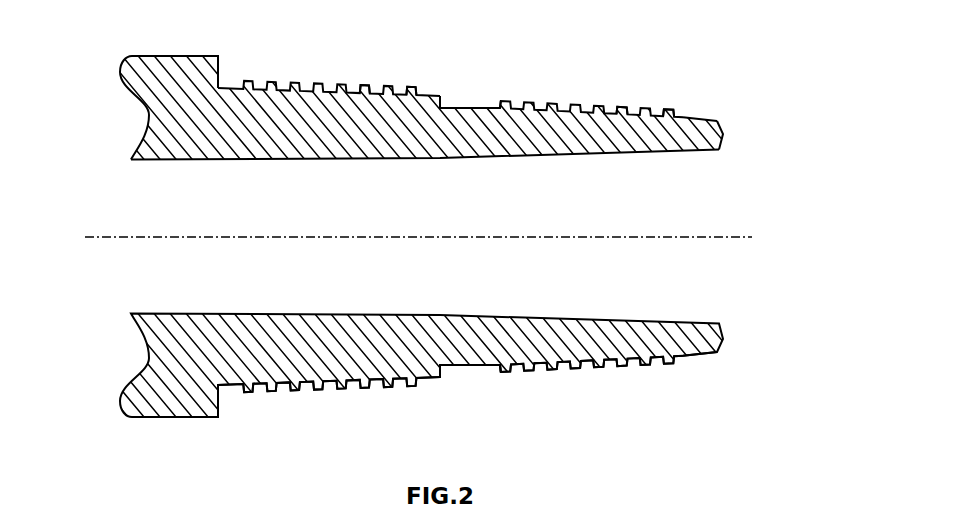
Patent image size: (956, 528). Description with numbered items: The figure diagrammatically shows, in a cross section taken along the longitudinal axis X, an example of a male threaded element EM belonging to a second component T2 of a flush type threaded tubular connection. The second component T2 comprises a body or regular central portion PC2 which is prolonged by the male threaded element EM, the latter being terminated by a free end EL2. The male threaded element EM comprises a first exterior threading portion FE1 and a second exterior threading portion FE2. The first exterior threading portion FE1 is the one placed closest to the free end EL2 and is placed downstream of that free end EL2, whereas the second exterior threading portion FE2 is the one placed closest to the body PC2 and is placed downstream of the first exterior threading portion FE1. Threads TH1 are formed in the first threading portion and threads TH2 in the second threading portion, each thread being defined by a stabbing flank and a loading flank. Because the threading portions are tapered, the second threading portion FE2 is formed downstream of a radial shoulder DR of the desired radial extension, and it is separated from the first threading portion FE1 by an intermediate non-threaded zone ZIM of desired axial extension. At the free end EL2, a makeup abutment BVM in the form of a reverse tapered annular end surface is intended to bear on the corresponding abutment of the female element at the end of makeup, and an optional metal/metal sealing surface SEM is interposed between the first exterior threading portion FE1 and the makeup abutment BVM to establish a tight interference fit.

The second component T2 is at (100, 100).
The body PC2 is at (140, 143).
The second exterior threading portion FE2 is at (310, 66).
The threads TH2 is at (370, 83).
The radial shoulder DR is at (443, 97).
The intermediate non-threaded zone ZIM is at (477, 102).
The first exterior threading portion FE1 is at (593, 97).
The threads TH1 is at (667, 108).
The metal/metal sealing surface SEM is at (716, 118).
The makeup abutment BVM is at (727, 141).
The male threaded element EM is at (375, 160).
The longitudinal axis X is at (421, 238).
The free end EL2 is at (732, 325).